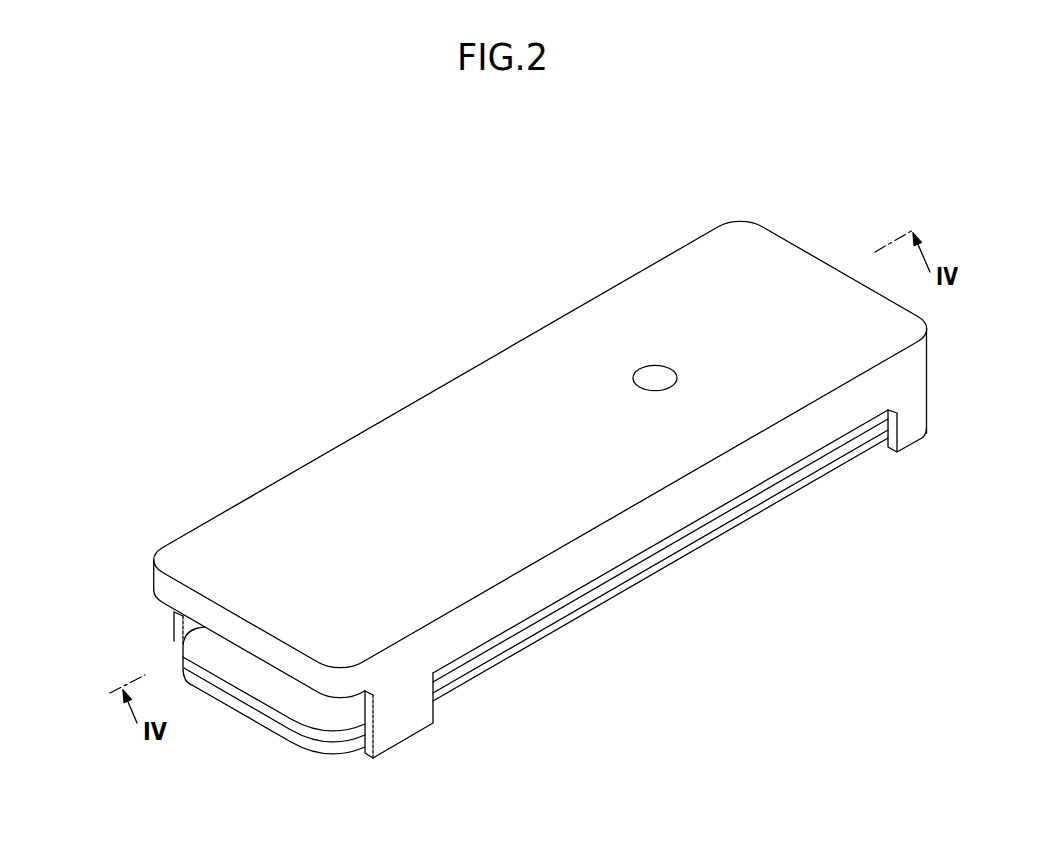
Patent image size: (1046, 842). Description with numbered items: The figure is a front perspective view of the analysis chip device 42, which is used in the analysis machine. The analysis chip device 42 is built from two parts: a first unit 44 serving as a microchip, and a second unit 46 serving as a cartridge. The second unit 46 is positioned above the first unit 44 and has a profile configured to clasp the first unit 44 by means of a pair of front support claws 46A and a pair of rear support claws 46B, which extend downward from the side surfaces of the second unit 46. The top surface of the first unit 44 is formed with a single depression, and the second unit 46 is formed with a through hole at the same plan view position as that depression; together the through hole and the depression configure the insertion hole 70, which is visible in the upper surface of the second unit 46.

The analysis chip device 42 is at (90, 468).
The first unit 44 is at (182, 657).
The second unit 46 is at (182, 535).
The front support claws 46A is at (157, 583).
The rear support claws 46B is at (913, 430).
The insertion hole 70 is at (657, 366).